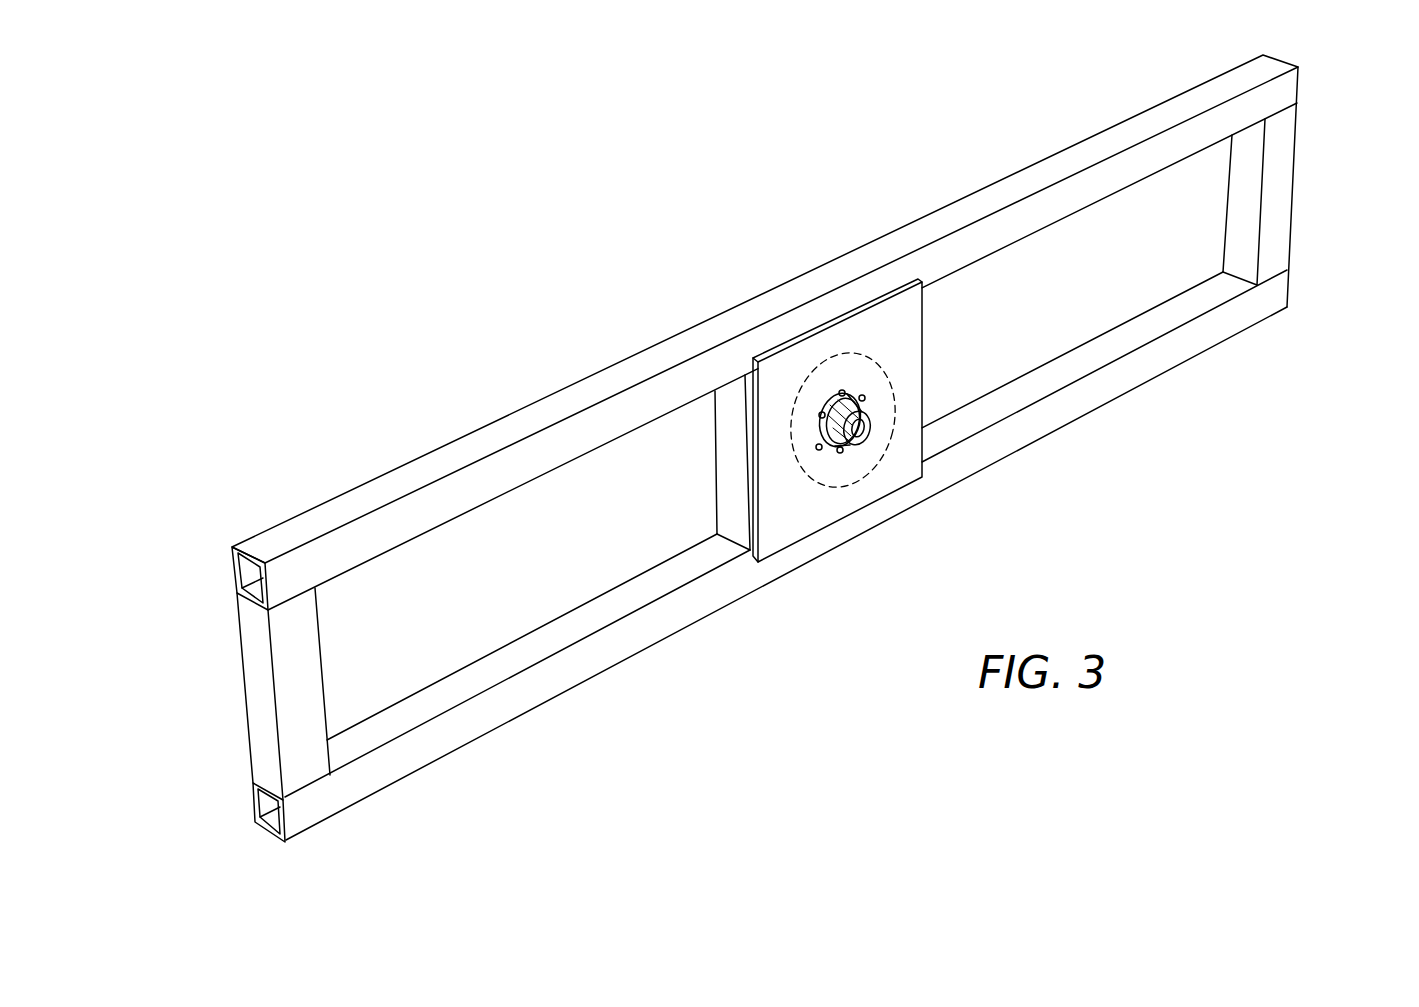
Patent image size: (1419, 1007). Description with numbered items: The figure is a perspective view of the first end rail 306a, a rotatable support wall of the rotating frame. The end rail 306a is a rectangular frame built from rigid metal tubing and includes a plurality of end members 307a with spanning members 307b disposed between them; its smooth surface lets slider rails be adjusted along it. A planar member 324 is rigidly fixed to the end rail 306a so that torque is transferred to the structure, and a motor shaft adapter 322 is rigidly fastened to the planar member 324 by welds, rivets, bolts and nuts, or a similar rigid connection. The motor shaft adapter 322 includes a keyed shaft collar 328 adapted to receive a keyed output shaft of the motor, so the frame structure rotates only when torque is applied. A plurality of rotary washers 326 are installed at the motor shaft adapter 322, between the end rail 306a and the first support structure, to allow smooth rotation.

The first end rail 306a is at (768, 448).
The end members 307a is at (255, 693).
The spanning members 307b is at (624, 416).
The motor shaft adapter 322 is at (867, 463).
The planar member 324 is at (792, 512).
The rotary washers 326 is at (879, 421).
The keyed shaft collar 328 is at (826, 396).